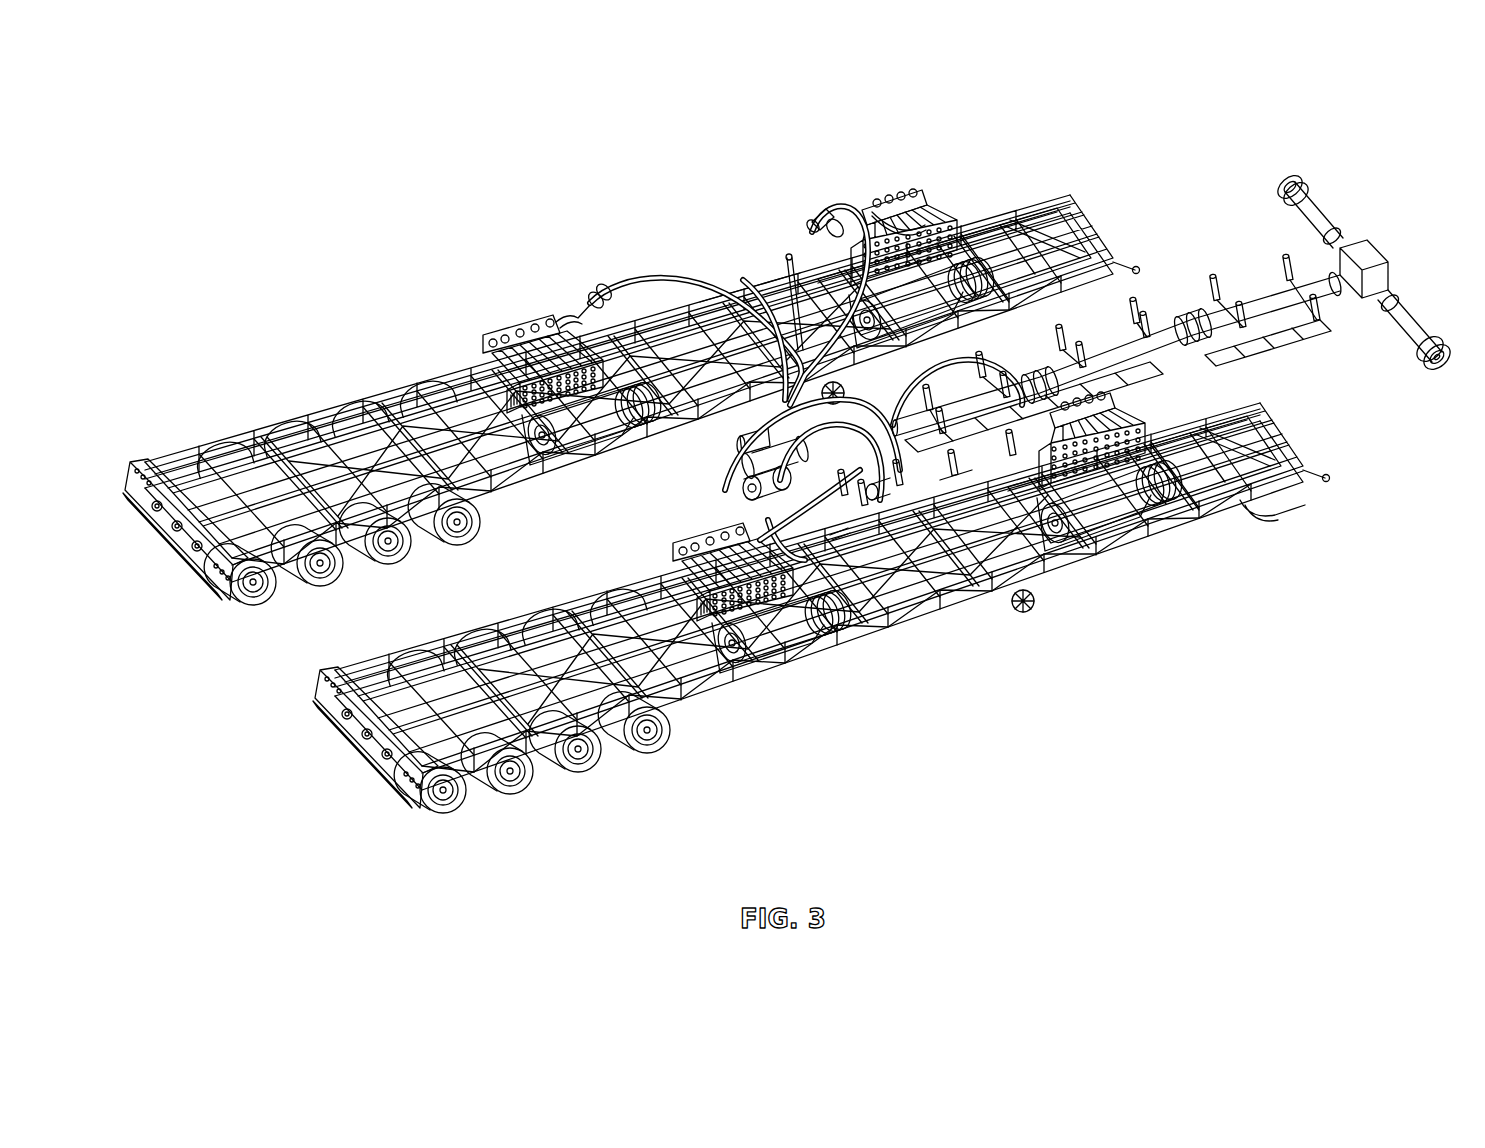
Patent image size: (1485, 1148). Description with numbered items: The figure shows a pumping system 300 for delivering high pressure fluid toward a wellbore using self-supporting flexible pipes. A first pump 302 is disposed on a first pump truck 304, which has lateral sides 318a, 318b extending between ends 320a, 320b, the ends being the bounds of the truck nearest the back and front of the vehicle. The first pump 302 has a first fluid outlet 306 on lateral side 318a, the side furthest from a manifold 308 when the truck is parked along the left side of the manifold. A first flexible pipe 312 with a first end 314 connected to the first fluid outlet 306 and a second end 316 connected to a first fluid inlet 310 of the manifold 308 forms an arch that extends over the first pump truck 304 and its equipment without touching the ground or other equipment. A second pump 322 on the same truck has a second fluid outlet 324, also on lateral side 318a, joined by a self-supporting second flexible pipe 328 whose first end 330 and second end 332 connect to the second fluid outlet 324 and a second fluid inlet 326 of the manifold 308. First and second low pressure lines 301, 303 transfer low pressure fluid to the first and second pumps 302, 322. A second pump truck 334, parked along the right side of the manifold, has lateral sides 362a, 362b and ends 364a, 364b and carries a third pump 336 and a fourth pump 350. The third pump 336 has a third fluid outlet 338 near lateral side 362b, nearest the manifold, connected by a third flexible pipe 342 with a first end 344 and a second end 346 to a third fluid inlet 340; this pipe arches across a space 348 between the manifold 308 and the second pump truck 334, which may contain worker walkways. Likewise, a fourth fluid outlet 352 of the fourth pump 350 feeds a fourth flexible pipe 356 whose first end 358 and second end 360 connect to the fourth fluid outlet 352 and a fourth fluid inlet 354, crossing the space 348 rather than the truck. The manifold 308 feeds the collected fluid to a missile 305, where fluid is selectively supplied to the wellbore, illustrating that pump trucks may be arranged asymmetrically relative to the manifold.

The pumping system 300 is at (783, 458).
The first low pressure line 301 is at (750, 287).
The first pump 302 is at (508, 315).
The second low pressure line 303 is at (837, 533).
The first pump truck 304 is at (312, 388).
The missile 305 is at (1392, 302).
The first fluid outlet 306 is at (567, 317).
The manifold 308 is at (1186, 306).
The first fluid inlet 310 is at (745, 440).
The first flexible pipe 312 is at (652, 277).
The first end 314 is at (598, 287).
The second end 316 is at (733, 283).
The lateral side 318a is at (206, 428).
The lateral side 318b is at (287, 582).
The end 320a is at (188, 575).
The end 320b is at (1100, 216).
The second pump 322 is at (907, 183).
The second fluid outlet 324 is at (835, 222).
The second fluid inlet 326 is at (793, 348).
The second flexible pipe 328 is at (918, 225).
The first end 330 is at (820, 214).
The second end 332 is at (750, 470).
The second pump truck 334 is at (1268, 520).
The third pump 336 is at (772, 682).
The third fluid outlet 338 is at (770, 517).
The third fluid inlet 340 is at (865, 505).
The third flexible pipe 342 is at (845, 495).
The first end 344 is at (767, 520).
The second end 346 is at (900, 485).
The space 348 is at (1013, 455).
The fourth pump 350 is at (1140, 553).
The fourth fluid outlet 352 is at (1040, 523).
The fourth fluid inlet 354 is at (872, 500).
The fourth flexible pipe 356 is at (985, 370).
The first end 358 is at (1058, 370).
The second end 360 is at (955, 475).
The lateral side 362a is at (440, 622).
The lateral side 362b is at (590, 780).
The end 364a is at (332, 745).
The end 364b is at (1296, 420).